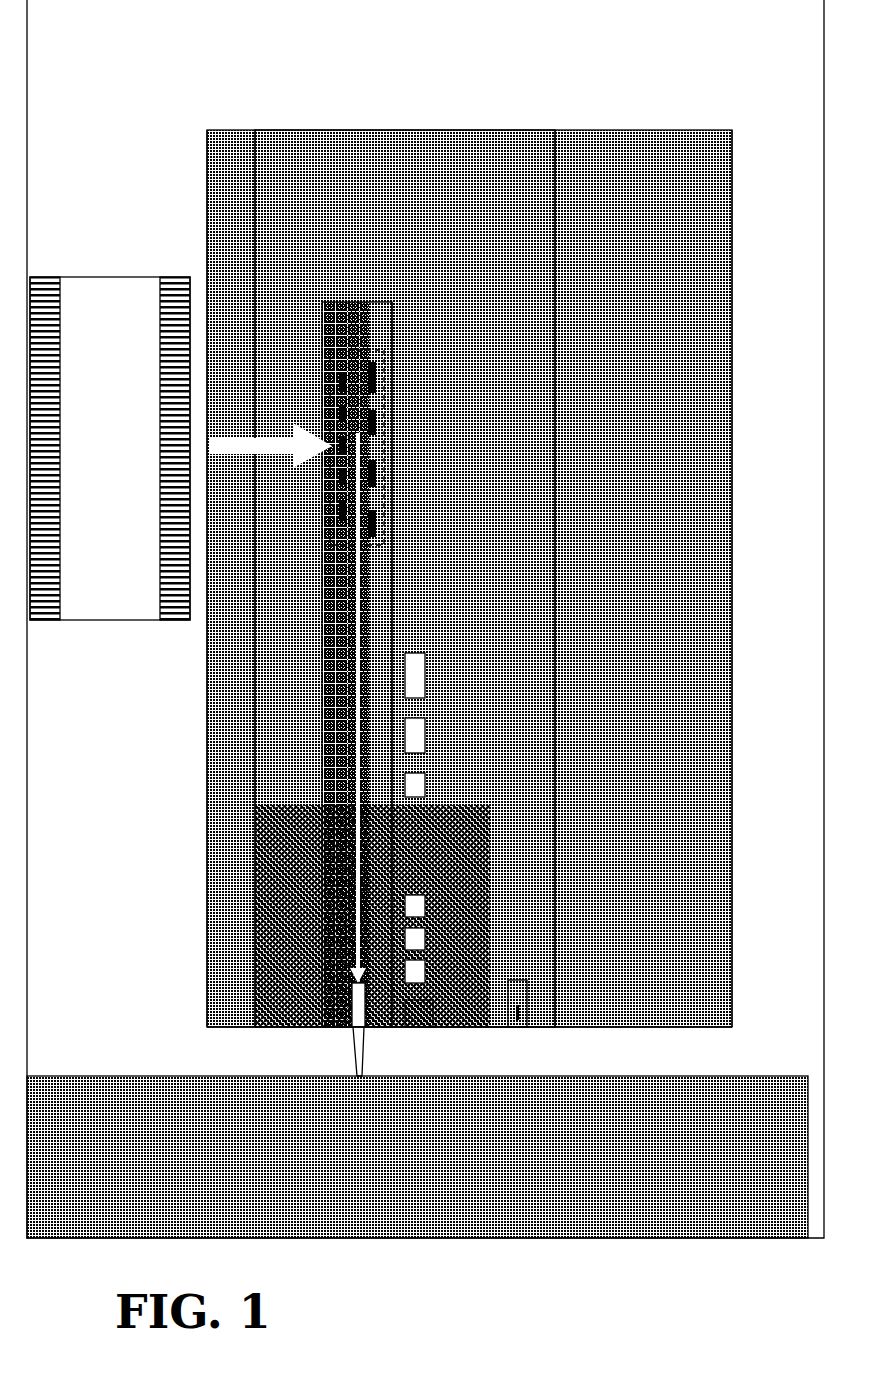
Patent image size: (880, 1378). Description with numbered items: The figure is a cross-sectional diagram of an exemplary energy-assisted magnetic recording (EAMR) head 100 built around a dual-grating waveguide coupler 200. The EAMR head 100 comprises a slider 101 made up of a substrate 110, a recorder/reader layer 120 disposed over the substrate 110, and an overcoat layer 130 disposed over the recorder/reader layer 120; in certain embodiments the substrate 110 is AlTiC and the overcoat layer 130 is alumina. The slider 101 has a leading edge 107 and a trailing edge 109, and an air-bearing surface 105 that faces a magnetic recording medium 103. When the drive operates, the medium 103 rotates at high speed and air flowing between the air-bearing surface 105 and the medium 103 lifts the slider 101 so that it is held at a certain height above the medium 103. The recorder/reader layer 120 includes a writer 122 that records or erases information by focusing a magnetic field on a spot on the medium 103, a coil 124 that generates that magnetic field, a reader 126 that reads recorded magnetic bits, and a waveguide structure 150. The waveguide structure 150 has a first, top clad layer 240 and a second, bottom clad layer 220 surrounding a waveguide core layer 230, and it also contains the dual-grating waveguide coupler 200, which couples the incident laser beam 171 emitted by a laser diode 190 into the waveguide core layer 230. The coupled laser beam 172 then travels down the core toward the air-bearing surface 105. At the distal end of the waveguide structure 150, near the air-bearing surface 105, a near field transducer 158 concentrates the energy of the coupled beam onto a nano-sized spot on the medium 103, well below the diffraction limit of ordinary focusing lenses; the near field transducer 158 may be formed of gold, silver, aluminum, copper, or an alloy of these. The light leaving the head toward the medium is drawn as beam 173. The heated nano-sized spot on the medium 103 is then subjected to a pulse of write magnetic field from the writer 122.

The EAMR head 100 is at (95, 92).
The slider 101 is at (732, 85).
The magnetic recording medium 103 is at (417, 1157).
The air-bearing surface 105 is at (548, 1030).
The leading edge 107 is at (735, 1027).
The trailing edge 109 is at (205, 1030).
The substrate 110 is at (626, 160).
The recorder/reader layer 120 is at (366, 160).
The writer 122 is at (372, 916).
The coil 124 is at (428, 935).
The reader 126 is at (515, 1030).
The overcoat layer 130 is at (230, 160).
The waveguide structure 150 is at (392, 255).
The near field transducer 158 is at (352, 1020).
The incident laser beam 171 is at (258, 443).
The coupled laser beam 172 is at (357, 683).
The light output to medium 173 is at (366, 1058).
The laser diode 190 is at (110, 448).
The dual-grating waveguide coupler 200 is at (330, 388).
The second, bottom clad layer 220 is at (385, 553).
The waveguide core layer 230 is at (358, 302).
The first, top clad layer 240 is at (328, 565).